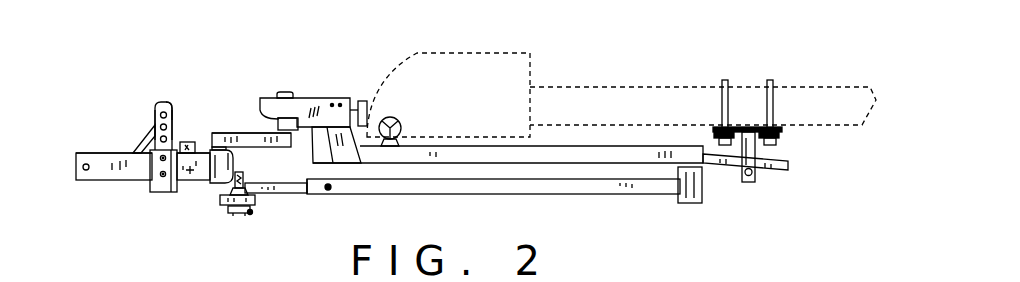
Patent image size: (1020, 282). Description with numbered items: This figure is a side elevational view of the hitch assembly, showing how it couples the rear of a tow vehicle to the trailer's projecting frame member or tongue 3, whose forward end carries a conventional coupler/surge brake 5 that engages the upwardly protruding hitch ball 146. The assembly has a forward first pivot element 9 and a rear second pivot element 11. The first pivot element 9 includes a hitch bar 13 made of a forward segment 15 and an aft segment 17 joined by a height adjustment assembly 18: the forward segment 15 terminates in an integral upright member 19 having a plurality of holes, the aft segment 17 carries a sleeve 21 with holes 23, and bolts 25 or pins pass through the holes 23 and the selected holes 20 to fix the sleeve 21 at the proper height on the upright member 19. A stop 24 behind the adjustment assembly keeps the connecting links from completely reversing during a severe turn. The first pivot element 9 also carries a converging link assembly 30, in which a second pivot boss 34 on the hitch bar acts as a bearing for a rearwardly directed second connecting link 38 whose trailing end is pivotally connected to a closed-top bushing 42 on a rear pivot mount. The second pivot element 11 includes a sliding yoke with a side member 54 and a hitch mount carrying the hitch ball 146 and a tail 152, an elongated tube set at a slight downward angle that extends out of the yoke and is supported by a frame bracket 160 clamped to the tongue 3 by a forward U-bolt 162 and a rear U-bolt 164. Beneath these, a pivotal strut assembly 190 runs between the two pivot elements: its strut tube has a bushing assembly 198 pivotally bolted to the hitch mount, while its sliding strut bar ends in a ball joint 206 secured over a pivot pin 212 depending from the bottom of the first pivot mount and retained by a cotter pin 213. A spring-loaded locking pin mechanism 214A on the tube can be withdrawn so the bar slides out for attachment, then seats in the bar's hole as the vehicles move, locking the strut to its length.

The frame member or tongue 3 is at (578, 97).
The coupler/surge brake 5 is at (478, 82).
The first pivot element 9 is at (203, 141).
The second pivot element 11 is at (327, 85).
The hitch bar 13 is at (97, 146).
The forward segment 15 is at (100, 168).
The aft segment 17 is at (163, 93).
The height adjustment assembly 18 is at (192, 173).
The upright member 19 is at (172, 107).
The selected holes 20 is at (157, 113).
The sleeve 21 is at (163, 174).
The holes 23 is at (163, 158).
The stop 24 is at (188, 142).
The bolts 25 is at (163, 182).
The converging link assembly 30 is at (232, 116).
The second pivot boss 34 is at (221, 177).
The second connecting link 38 is at (255, 140).
The bushing 42 is at (284, 92).
The side member 54 is at (562, 152).
The hitch ball 146 is at (388, 117).
The tail 152 is at (787, 170).
The frame bracket 160 is at (745, 102).
The forward U-bolt 162 is at (723, 80).
The rear U-bolt 164 is at (770, 80).
The pivotal strut assembly 190 is at (643, 200).
The bushing assembly 198 is at (693, 204).
The ball joint 206 is at (252, 205).
The pivot pin 212 is at (243, 175).
The cotter pin 213 is at (250, 215).
The spring-loaded locking pin mechanism 214A is at (329, 187).